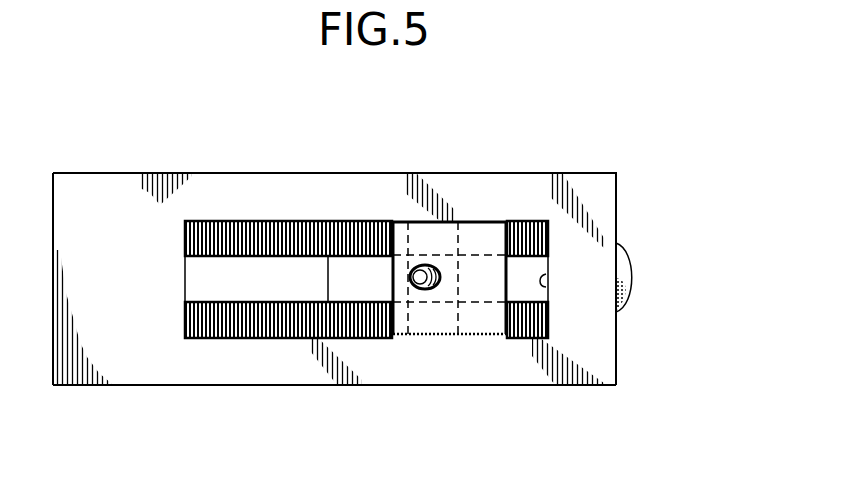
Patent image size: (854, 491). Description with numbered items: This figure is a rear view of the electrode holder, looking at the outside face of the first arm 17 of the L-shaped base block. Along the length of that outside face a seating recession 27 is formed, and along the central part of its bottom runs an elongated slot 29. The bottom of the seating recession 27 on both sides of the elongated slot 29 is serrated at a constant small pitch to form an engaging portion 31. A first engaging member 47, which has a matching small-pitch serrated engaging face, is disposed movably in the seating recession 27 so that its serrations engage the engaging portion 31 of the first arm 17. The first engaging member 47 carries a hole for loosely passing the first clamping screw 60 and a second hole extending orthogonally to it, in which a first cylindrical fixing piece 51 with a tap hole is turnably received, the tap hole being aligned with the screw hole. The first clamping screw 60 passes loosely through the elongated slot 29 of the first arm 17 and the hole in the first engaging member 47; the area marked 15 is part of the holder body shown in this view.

The sensor body 15 is at (334, 265).
The first arm 17 is at (283, 370).
The seating recession 27 is at (543, 284).
The elongated slot 29 is at (368, 273).
The engaging portion 31 is at (291, 232).
The first engaging member 47 is at (444, 345).
The first cylindrical fixing piece 51 is at (432, 325).
The first clamping screw 60 is at (628, 262).